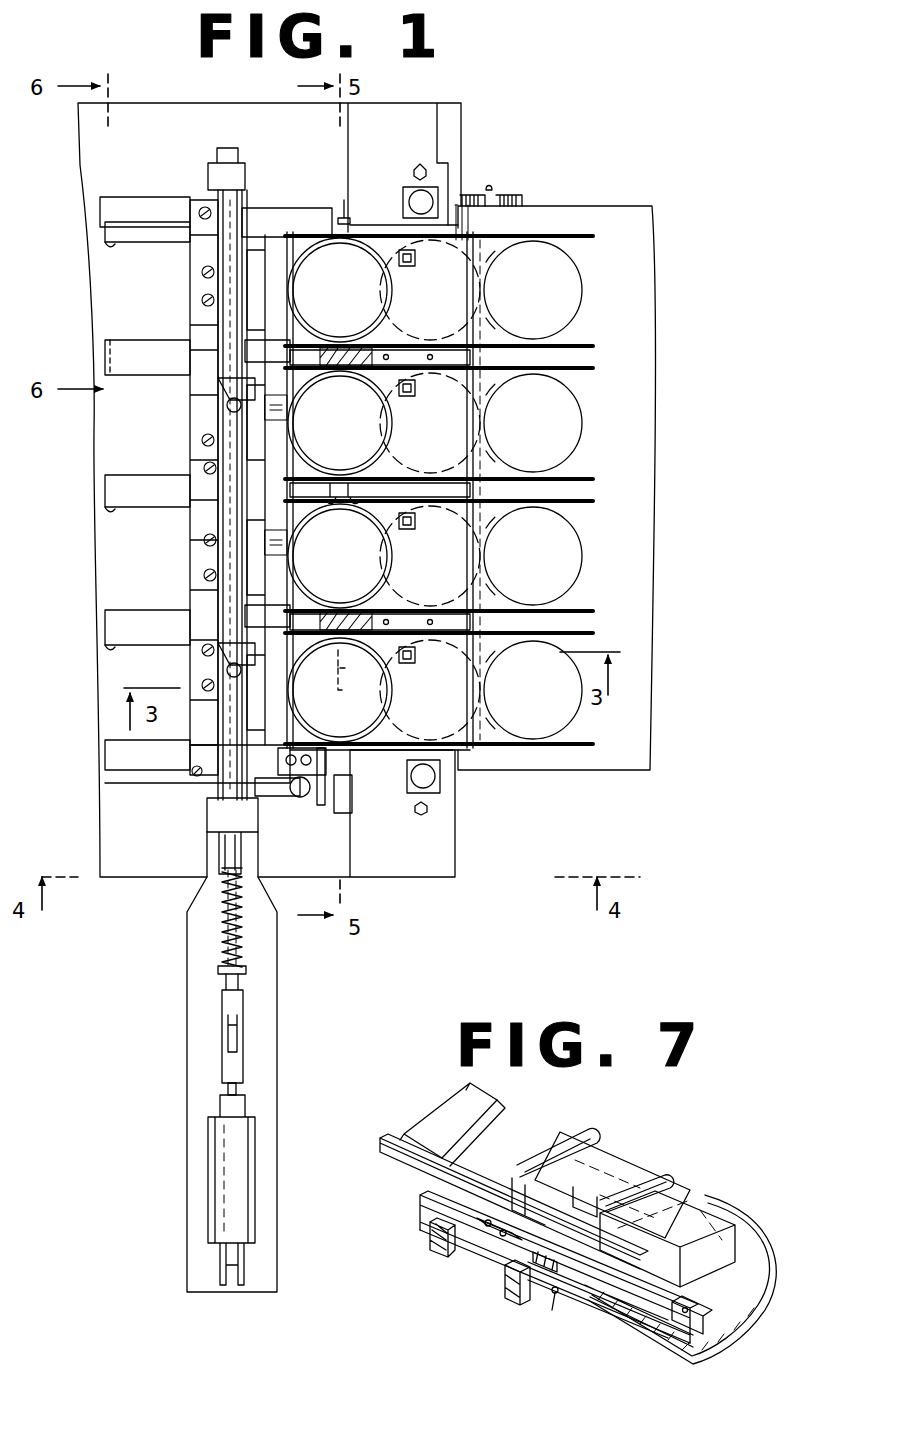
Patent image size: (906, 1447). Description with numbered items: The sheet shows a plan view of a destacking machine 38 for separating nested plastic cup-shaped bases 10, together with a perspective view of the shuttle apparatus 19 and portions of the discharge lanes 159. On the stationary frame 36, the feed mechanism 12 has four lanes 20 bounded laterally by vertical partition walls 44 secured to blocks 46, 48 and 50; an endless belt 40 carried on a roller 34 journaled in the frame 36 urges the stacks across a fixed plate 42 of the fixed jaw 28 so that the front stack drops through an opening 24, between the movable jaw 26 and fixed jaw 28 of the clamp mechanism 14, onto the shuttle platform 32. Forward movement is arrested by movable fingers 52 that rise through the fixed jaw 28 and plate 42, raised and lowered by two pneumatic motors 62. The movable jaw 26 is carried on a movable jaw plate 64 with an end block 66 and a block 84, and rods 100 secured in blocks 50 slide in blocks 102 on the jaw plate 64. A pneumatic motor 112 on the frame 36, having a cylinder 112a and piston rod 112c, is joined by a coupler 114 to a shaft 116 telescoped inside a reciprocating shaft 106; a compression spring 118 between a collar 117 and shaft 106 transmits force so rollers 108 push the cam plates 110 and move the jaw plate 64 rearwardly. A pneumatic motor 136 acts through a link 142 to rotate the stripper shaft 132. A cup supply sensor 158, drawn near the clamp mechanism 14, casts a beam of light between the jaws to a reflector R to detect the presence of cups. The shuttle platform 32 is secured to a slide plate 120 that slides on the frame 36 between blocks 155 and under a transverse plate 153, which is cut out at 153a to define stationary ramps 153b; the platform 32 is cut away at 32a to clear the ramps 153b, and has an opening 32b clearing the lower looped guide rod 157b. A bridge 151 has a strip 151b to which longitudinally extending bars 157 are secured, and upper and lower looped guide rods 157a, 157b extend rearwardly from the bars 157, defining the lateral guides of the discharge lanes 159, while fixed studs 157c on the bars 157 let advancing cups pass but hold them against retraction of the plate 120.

In FIG. 1, the stationary frame 36 is at (76, 148).
In FIG. 7, the stationary frame 36 is at (706, 1350).
In FIG. 1, the destacking machine 38 is at (530, 120).
In FIG. 1, the feed mechanism 12 is at (655, 240).
In FIG. 1, the endless belt 40 is at (648, 374).
In FIG. 1, the roller 34 is at (505, 203).
In FIG. 1, the clamp mechanism 14 is at (256, 526).
In FIG. 1, the movable jaw plate 64 is at (286, 212).
In FIG. 1, the reflector R is at (346, 215).
In FIG. 1, the end block 66 is at (255, 430).
In FIG. 1, the blocks 102 is at (250, 355).
In FIG. 1, the cam plates 110 is at (232, 372).
In FIG. 1, the rollers 108 is at (228, 407).
In FIG. 1, the block 84 is at (286, 406).
In FIG. 1, the longitudinally extending bars 157 is at (122, 355).
In FIG. 7, the longitudinally extending bars 157 is at (430, 1243).
In FIG. 1, the fixed studs 157c is at (115, 246).
In FIG. 7, the fixed studs 157c is at (554, 1298).
In FIG. 1, the discharge lanes 159 is at (120, 290).
In FIG. 1, the slide plate 120 is at (120, 451).
In FIG. 7, the slide plate 120 is at (672, 1320).
In FIG. 1, the vertical partition walls 44 is at (571, 235).
In FIG. 1, the blocks 50 is at (464, 364).
In FIG. 1, the rods 100 is at (345, 352).
In FIG. 1, the block 48 is at (464, 498).
In FIG. 1, the movable jaw 26 is at (298, 277).
In FIG. 1, the opening 24 is at (355, 296).
In FIG. 1, the fixed jaw 28 is at (388, 428).
In FIG. 1, the plastic cup-shaped bases 10 is at (580, 274).
In FIG. 1, the fixed plate 42 is at (446, 322).
In FIG. 1, the lanes 20 is at (618, 290).
In FIG. 1, the movable fingers 52 is at (416, 395).
In FIG. 1, the pneumatic motors 62 is at (406, 200).
In FIG. 1, the block 46 is at (375, 226).
In FIG. 1, the pneumatic motor 136 is at (305, 800).
In FIG. 1, the stripper shaft 132 is at (272, 800).
In FIG. 1, the block 158 is at (350, 800).
In FIG. 1, the reciprocating shaft 106 is at (215, 760).
In FIG. 1, the link 142 is at (228, 792).
In FIG. 1, the shaft 116 is at (228, 936).
In FIG. 1, the compression spring 118 is at (225, 915).
In FIG. 1, the collar 117 is at (218, 970).
In FIG. 1, the coupler 114 is at (226, 1030).
In FIG. 1, the piston rod 112c is at (226, 1090).
In FIG. 1, the pneumatic motor 112 is at (208, 1158).
In FIG. 1, the cylinder 112a is at (222, 1180).
In FIG. 7, the bridge 151 is at (420, 1198).
In FIG. 7, the strip 151b is at (440, 1210).
In FIG. 7, the transverse plate 153 is at (386, 1136).
In FIG. 7, the cut-out 153a is at (512, 1090).
In FIG. 7, the stationary ramps 153b is at (456, 1098).
In FIG. 7, the shuttle platform 32 is at (692, 1195).
In FIG. 7, the cut-away 32a is at (512, 1258).
In FIG. 7, the opening 32b is at (460, 1176).
In FIG. 7, the upper looped guide rod 157a is at (578, 1136).
In FIG. 7, the lower looped guide rod 157b is at (528, 1185).
In FIG. 7, the shuttle apparatus 19 is at (603, 1145).
In FIG. 7, the blocks 155 is at (702, 1326).